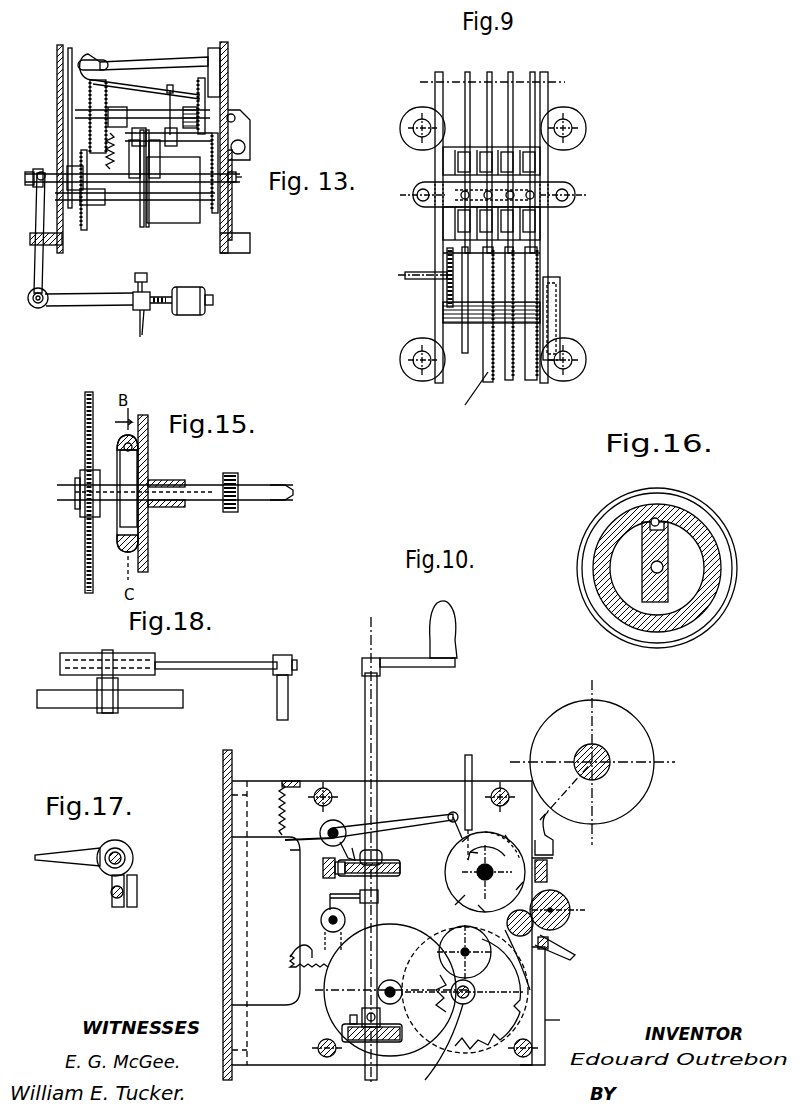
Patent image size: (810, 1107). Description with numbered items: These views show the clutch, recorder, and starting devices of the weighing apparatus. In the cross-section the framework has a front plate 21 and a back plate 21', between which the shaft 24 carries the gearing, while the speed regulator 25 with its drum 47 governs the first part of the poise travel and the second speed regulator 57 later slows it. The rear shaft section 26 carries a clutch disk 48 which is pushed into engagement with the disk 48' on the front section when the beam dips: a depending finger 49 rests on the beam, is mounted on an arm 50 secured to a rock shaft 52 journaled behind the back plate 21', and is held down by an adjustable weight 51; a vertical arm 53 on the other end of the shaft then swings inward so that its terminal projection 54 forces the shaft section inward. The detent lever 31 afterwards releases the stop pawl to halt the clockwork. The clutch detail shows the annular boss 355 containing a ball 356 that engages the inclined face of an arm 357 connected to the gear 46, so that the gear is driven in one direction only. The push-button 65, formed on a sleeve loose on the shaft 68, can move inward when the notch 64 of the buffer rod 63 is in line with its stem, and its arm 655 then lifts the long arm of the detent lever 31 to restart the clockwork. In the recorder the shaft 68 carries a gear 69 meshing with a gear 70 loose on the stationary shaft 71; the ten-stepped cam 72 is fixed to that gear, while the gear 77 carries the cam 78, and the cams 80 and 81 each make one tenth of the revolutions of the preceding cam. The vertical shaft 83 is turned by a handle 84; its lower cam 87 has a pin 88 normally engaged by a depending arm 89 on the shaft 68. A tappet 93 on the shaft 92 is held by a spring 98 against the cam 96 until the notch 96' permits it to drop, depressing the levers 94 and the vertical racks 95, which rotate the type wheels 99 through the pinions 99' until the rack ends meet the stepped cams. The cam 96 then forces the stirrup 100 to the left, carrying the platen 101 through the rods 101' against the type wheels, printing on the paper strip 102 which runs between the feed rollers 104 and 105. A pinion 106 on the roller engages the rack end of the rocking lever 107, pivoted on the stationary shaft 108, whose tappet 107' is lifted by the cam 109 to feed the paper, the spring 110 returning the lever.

In FIG. 13, the plate 21 is at (253, 147).
In FIG. 13, the back plate 21' is at (48, 149).
In FIG. 15, the shaft 24 is at (296, 475).
In FIG. 13, the speed regulator 25 is at (145, 55).
In FIG. 13, the rear shaft section 26 is at (240, 182).
In FIG. 13, the detent lever 31 is at (172, 86).
In FIG. 15, the gear 46 is at (85, 410).
In FIG. 13, the drum 47 is at (214, 47).
In FIG. 13, the clutch disk 48 is at (127, 197).
In FIG. 13, the clutch disk 48' is at (160, 196).
In FIG. 13, the depending finger 49 is at (138, 335).
In FIG. 13, the arm 50 is at (82, 293).
In FIG. 13, the adjustable weight 51 is at (188, 310).
In FIG. 13, the rock shaft 52 is at (32, 311).
In FIG. 13, the vertical arm 53 is at (37, 207).
In FIG. 13, the terminal projection 54 is at (30, 172).
In FIG. 13, the speed regulator 57 is at (188, 218).
In FIG. 13, the bracket 63 is at (250, 128).
In FIG. 18, the bracket 63 is at (62, 700).
In FIG. 18, the notch 64 is at (100, 705).
In FIG. 17, the notch 64 is at (124, 900).
In FIG. 13, the push-button 65 is at (245, 147).
In FIG. 18, the push-button 65 is at (118, 710).
In FIG. 17, the push-button 65 is at (137, 892).
In FIG. 17, the arm 655 is at (52, 862).
In FIG. 9, the shaft 68 is at (405, 272).
In FIG. 18, the shaft 68 is at (246, 660).
In FIG. 17, the shaft 68 is at (133, 858).
In FIG. 10, the shaft 68 is at (460, 955).
In FIG. 9, the gear 69 is at (447, 265).
In FIG. 10, the gear 69 is at (480, 970).
In FIG. 9, the gear 70 is at (445, 305).
In FIG. 10, the gear 70 is at (455, 1000).
In FIG. 9, the stationary shaft 71 is at (560, 318).
In FIG. 10, the stationary shaft 71 is at (437, 1055).
In FIG. 9, the ten-stepped cam 72 is at (462, 340).
In FIG. 10, the ten-stepped cam 72 is at (480, 1040).
In FIG. 9, the gear 77 is at (468, 408).
In FIG. 10, the gear 77 is at (563, 1023).
In FIG. 9, the cam 78 is at (483, 360).
In FIG. 9, the cam 80 is at (507, 360).
In FIG. 9, the cam 81 is at (527, 360).
In FIG. 10, the vertical shaft 83 is at (365, 715).
In FIG. 10, the handle 84 is at (393, 658).
In FIG. 10, the lower cam 87 is at (342, 1033).
In FIG. 10, the pin 88 is at (362, 1012).
In FIG. 18, the depending arm 89 is at (277, 695).
In FIG. 17, the depending arm 89 is at (112, 895).
In FIG. 10, the shaft 92 is at (322, 825).
In FIG. 10, the tappet 93 is at (349, 848).
In FIG. 10, the levers 94 is at (413, 822).
In FIG. 9, the vertical racks 95 is at (511, 73).
In FIG. 10, the vertical racks 95 is at (468, 755).
In FIG. 10, the cam 96 is at (388, 857).
In FIG. 10, the notch 96' is at (368, 853).
In FIG. 10, the spring 98 is at (282, 810).
In FIG. 10, the type wheels 99 is at (485, 861).
In FIG. 10, the pinions 99' is at (444, 895).
In FIG. 10, the stirrup 100 is at (323, 868).
In FIG. 9, the platen 101 is at (500, 209).
In FIG. 10, the platen 101 is at (567, 867).
In FIG. 9, the rods 101' is at (499, 244).
In FIG. 10, the rods 101' is at (442, 845).
In FIG. 10, the paper strip 102 is at (592, 767).
In FIG. 10, the feed roller 104 is at (565, 895).
In FIG. 10, the feed roller 105 is at (530, 950).
In FIG. 10, the pinion 106 is at (555, 938).
In FIG. 10, the rocking lever 107 is at (392, 981).
In FIG. 10, the tappet 107' is at (315, 894).
In FIG. 10, the stationary shaft 108 is at (322, 915).
In FIG. 10, the cam 109 is at (378, 895).
In FIG. 10, the spring 110 is at (288, 958).
In FIG. 15, the annular boss 355 is at (148, 537).
In FIG. 15, the ball 356 is at (132, 447).
In FIG. 16, the ball 356 is at (660, 520).
In FIG. 15, the arm 357 is at (132, 470).
In FIG. 16, the arm 357 is at (665, 550).